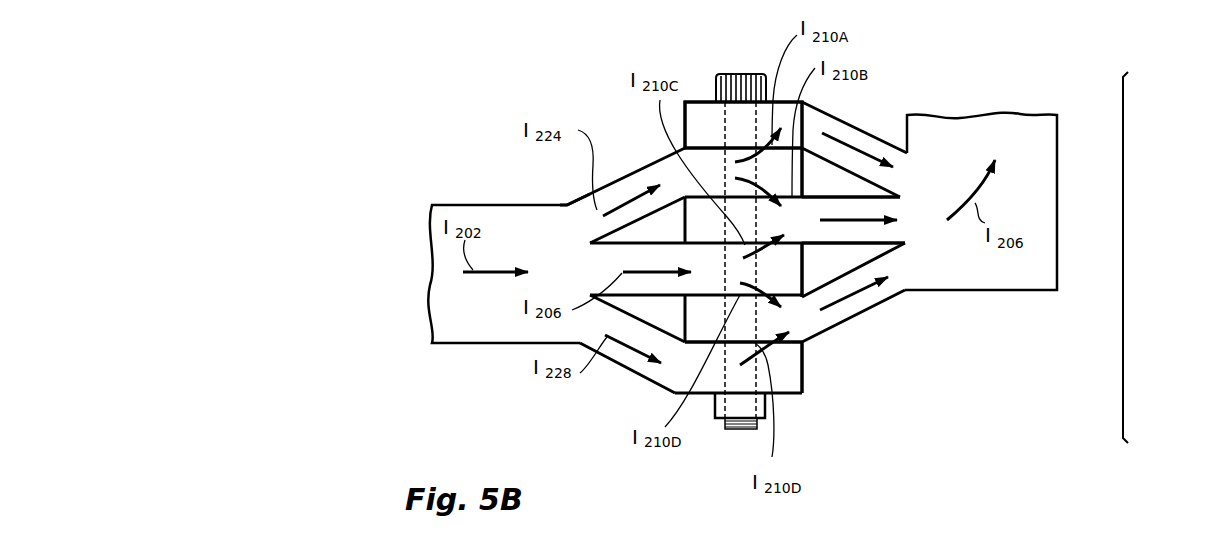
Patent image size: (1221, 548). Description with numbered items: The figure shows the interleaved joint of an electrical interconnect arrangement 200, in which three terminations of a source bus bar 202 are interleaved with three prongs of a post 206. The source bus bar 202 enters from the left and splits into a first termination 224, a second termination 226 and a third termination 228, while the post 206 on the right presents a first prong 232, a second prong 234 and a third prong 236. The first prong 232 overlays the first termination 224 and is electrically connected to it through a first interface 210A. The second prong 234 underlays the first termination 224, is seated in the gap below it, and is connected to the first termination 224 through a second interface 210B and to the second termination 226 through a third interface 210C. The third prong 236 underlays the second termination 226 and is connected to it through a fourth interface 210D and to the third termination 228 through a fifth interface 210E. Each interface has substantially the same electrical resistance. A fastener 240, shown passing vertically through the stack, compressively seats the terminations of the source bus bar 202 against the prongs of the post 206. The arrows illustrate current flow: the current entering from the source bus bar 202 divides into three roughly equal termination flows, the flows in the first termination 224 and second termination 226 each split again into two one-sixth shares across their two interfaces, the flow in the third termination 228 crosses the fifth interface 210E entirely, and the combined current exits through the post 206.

The electrical interconnect arrangement 200 is at (1181, 256).
The source bus bar 202 is at (452, 328).
The post 206 is at (1040, 138).
The first interface 210A is at (704, 147).
The second interface 210B is at (803, 135).
The third interface 210C is at (790, 245).
The fourth interface 210D is at (808, 300).
The fifth interface 210E is at (725, 338).
The first termination 224 is at (630, 190).
The second termination 226 is at (580, 200).
The third termination 228 is at (613, 353).
The first prong 232 is at (887, 147).
The second prong 234 is at (850, 233).
The third prong 236 is at (822, 320).
The fastener 240 is at (738, 72).